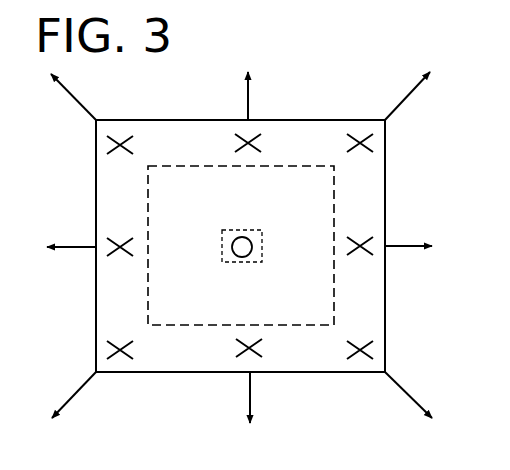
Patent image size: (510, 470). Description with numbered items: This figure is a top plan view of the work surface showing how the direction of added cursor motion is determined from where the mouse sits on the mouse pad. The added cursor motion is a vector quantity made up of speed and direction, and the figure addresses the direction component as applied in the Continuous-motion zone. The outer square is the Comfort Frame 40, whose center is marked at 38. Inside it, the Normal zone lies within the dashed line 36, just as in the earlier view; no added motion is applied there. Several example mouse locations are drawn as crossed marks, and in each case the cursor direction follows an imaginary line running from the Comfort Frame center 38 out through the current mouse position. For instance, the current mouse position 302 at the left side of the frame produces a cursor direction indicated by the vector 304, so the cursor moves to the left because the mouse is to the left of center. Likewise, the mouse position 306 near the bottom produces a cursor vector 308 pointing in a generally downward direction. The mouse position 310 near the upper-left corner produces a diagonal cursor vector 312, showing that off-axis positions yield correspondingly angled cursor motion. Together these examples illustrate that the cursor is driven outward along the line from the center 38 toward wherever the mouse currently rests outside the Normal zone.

The Comfort Frame 40 is at (336, 119).
The dashed line 36 is at (335, 190).
The center of the Comfort Frame 38 is at (243, 258).
The mouse position 310 is at (118, 136).
The current mouse position 302 is at (120, 240).
The mouse position 306 is at (236, 348).
The diagonal cursor vector 312 is at (73, 100).
The vector 304 is at (70, 252).
The cursor vector 308 is at (253, 387).